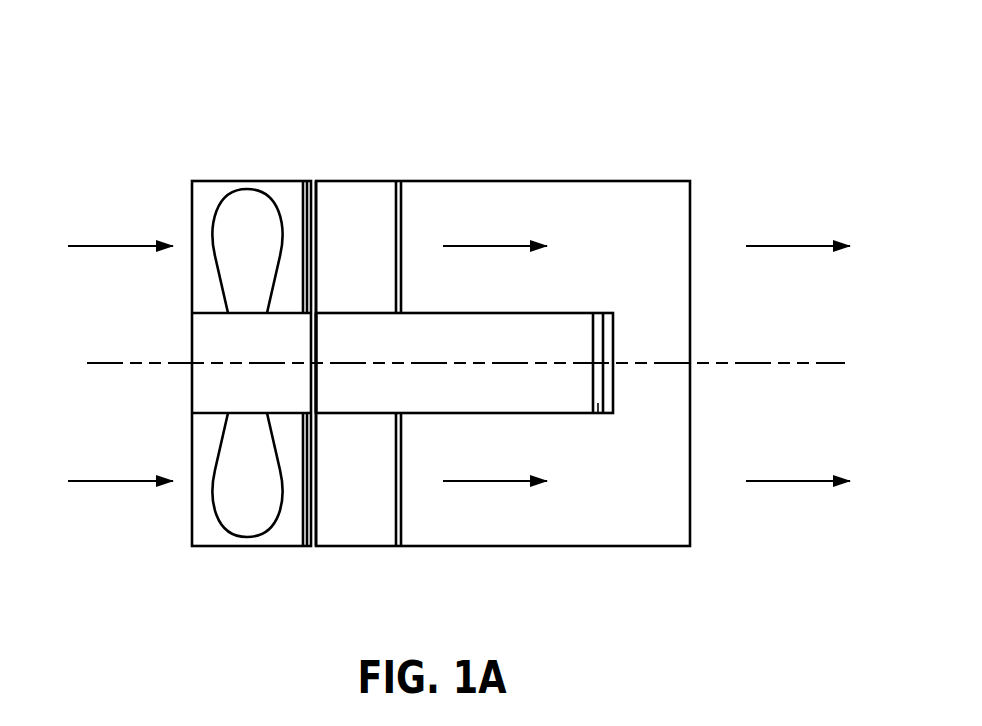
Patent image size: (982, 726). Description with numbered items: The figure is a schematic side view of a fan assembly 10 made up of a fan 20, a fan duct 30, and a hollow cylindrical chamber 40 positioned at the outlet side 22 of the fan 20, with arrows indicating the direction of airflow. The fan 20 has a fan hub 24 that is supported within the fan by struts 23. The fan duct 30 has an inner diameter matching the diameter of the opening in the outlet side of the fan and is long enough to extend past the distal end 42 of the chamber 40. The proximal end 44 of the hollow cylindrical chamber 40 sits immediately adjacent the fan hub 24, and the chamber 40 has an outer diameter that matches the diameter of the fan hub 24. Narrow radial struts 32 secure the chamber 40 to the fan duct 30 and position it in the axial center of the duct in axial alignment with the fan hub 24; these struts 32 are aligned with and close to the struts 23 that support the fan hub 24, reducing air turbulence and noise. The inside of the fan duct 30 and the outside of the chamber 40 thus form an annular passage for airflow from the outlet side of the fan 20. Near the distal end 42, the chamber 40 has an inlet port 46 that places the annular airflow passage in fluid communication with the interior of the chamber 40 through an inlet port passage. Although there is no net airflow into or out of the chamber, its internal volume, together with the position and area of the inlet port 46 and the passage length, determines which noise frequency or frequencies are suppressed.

The fan assembly 10 is at (130, 90).
The fan 20 is at (237, 181).
The outlet side 22 is at (317, 204).
The struts 23 is at (303, 205).
The fan hub 24 is at (235, 330).
The fan duct 30 is at (525, 181).
The radial struts 32 is at (402, 205).
The hollow cylindrical chamber 40 is at (560, 313).
The distal end 42 is at (613, 338).
The proximal end 44 is at (317, 345).
The inlet port 46 is at (598, 413).